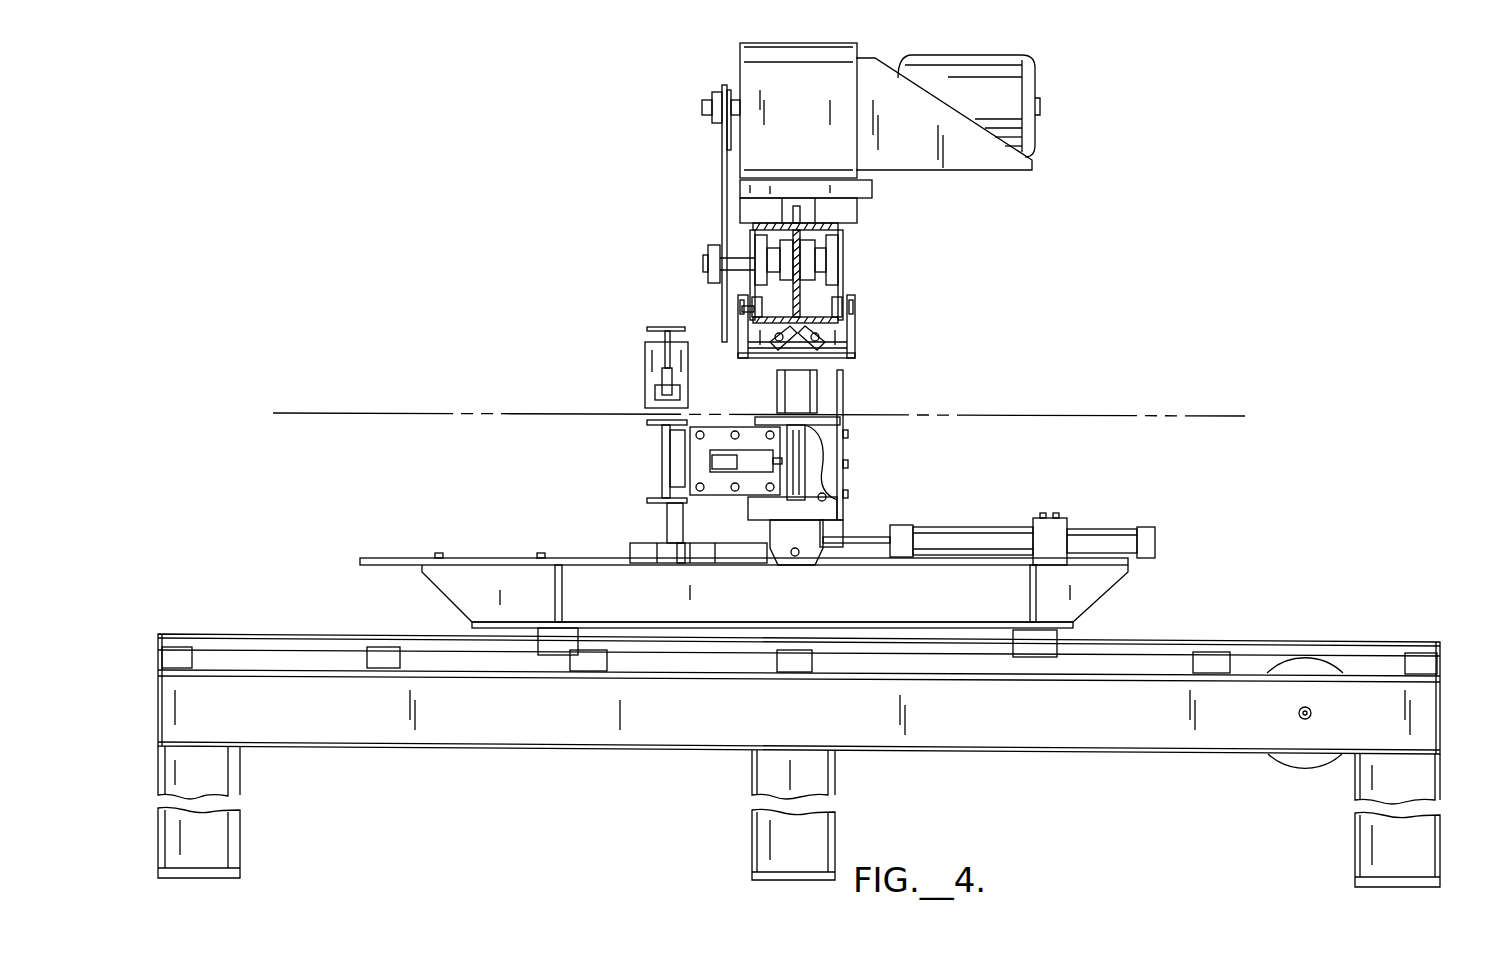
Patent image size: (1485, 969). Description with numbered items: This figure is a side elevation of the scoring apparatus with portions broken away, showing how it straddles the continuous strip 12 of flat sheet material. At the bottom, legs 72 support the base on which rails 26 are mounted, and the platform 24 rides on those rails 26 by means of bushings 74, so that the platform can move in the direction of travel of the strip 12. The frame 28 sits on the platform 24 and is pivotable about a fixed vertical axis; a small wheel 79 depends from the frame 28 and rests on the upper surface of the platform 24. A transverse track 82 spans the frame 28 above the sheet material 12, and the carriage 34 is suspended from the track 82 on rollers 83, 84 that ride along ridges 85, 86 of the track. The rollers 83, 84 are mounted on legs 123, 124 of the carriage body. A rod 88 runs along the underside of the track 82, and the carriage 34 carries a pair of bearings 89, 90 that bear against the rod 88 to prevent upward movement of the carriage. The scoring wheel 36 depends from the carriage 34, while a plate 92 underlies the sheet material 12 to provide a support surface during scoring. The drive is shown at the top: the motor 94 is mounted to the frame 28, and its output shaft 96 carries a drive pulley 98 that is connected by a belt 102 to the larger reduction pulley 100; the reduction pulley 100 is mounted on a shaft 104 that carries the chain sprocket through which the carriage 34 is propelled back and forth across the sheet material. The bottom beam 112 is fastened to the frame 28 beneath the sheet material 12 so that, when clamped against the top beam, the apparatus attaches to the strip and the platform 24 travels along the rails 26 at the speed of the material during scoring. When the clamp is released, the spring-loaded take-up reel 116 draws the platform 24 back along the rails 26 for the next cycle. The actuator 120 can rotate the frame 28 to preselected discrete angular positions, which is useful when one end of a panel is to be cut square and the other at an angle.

The continuous strip of sheet material 12 is at (1170, 416).
The platform 24 is at (1100, 585).
The rails 26 is at (1170, 638).
The frame 28 is at (843, 148).
The carriage 34 is at (862, 318).
The scoring wheel 36 is at (812, 396).
The legs 72 is at (240, 840).
The bushings 74 is at (555, 657).
The small wheel 79 is at (800, 560).
The transverse track 82 is at (855, 335).
The roller 83 is at (815, 332).
The roller 84 is at (750, 300).
The ridge 85 is at (853, 305).
The ridge 86 is at (745, 316).
The rod 88 is at (792, 330).
The bearing 89 is at (825, 342).
The bearing 90 is at (776, 347).
The plate 92 is at (812, 428).
The motor 94 is at (1005, 83).
The output shaft 96 is at (702, 106).
The drive pulley 98 is at (727, 88).
The reduction pulley 100 is at (722, 210).
The belt 102 is at (722, 158).
The shaft 104 is at (742, 252).
The bottom beam 112 is at (662, 461).
The take-up reel 116 is at (1300, 768).
The actuator 120 is at (945, 527).
The leg 123 is at (738, 340).
The leg 124 is at (852, 347).